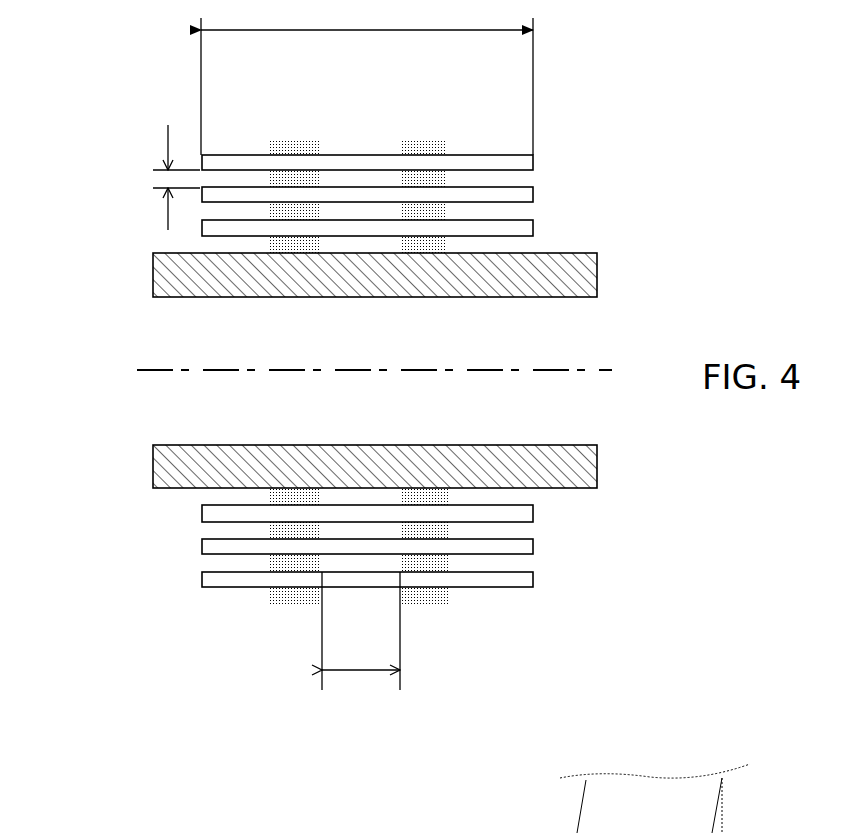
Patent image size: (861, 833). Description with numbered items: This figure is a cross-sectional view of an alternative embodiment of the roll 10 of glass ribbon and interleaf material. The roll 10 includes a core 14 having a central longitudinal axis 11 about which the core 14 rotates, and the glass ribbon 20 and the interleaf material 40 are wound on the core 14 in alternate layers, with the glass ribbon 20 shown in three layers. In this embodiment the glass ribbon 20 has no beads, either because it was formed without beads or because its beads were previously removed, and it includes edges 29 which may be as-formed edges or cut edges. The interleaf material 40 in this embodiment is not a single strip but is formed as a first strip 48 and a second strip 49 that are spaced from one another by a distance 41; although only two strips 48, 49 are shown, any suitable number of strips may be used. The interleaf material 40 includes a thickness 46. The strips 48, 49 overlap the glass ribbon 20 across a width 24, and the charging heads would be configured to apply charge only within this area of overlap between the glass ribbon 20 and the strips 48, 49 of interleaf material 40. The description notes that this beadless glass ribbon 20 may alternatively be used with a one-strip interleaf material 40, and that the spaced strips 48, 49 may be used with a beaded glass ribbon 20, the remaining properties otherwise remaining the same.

The roll 10 is at (150, 553).
The central longitudinal axis 11 is at (155, 369).
The core 14 is at (162, 466).
The glass ribbon 20 is at (382, 195).
The width 24 is at (467, 30).
The edges 29 is at (533, 228).
The interleaf material 40 is at (452, 498).
The distance 41 is at (360, 670).
The thickness 46 is at (165, 145).
The first strip 48 is at (308, 562).
The second strip 49 is at (435, 565).